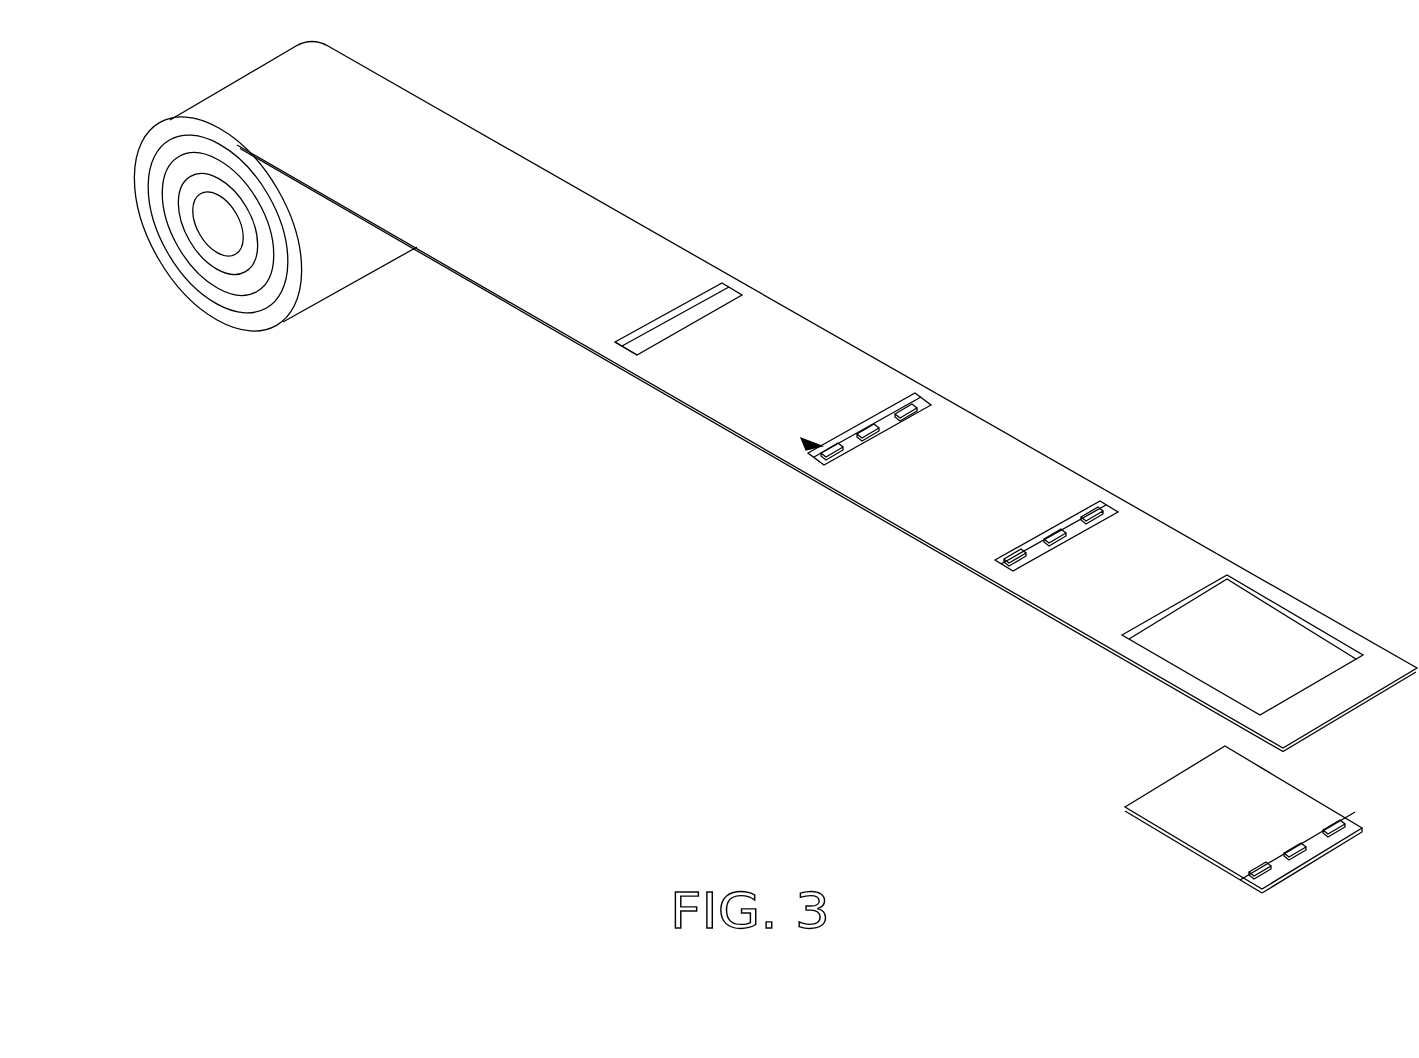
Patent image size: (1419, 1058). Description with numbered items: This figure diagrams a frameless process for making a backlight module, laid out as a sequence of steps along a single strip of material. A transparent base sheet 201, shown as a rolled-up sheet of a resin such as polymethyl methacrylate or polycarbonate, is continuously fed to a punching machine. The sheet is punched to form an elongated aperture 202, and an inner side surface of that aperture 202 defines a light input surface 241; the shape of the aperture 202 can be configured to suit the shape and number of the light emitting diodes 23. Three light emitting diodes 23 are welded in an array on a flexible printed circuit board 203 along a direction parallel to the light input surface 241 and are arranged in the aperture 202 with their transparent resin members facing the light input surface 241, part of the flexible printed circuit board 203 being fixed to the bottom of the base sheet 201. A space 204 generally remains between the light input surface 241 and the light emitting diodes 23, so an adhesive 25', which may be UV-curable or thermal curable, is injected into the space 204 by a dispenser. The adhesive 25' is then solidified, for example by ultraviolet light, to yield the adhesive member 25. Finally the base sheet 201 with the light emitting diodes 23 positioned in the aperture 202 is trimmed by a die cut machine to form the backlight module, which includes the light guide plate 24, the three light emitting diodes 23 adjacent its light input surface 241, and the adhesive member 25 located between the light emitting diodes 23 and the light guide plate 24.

The transparent base sheet 201 is at (260, 323).
The elongated aperture 202 is at (722, 296).
The light input surface 241 is at (634, 338).
The flexible printed circuit board 203 is at (925, 407).
The space 204 is at (805, 443).
The light emitting diodes 23 is at (912, 403).
The adhesive 25' is at (1078, 509).
The light guide plate 24 is at (1183, 797).
The adhesive member 25 is at (1276, 864).